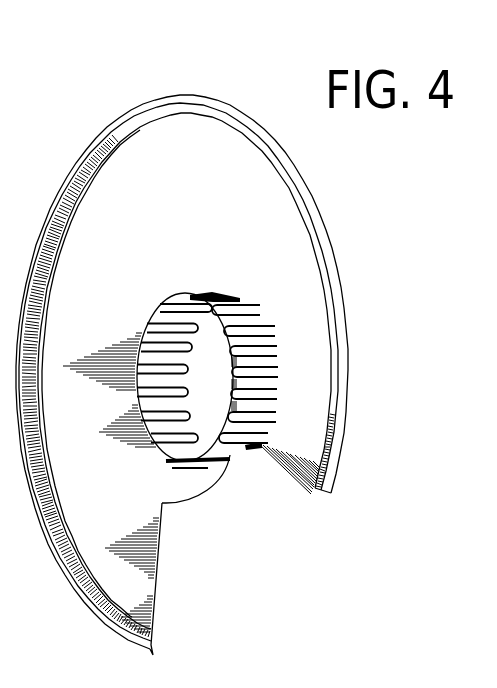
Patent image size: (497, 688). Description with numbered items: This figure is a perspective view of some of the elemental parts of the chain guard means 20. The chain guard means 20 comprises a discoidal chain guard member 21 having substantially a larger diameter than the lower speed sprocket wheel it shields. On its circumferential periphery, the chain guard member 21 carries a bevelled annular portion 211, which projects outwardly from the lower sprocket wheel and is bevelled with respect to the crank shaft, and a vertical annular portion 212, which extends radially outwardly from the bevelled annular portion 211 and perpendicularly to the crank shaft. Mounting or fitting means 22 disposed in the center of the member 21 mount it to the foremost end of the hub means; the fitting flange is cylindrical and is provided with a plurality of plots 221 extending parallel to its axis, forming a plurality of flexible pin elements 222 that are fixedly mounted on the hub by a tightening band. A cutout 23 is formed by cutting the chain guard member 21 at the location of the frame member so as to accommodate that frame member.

The chain guard means 20 is at (299, 281).
The discoidal chain guard member 21 is at (282, 228).
The bevelled annular portion 211 is at (331, 324).
The vertical annular portion 212 is at (343, 357).
The mounting or fitting means 22 is at (176, 297).
The plots 221 is at (257, 445).
The flexible pin elements 222 is at (278, 409).
The cutout 23 is at (157, 593).